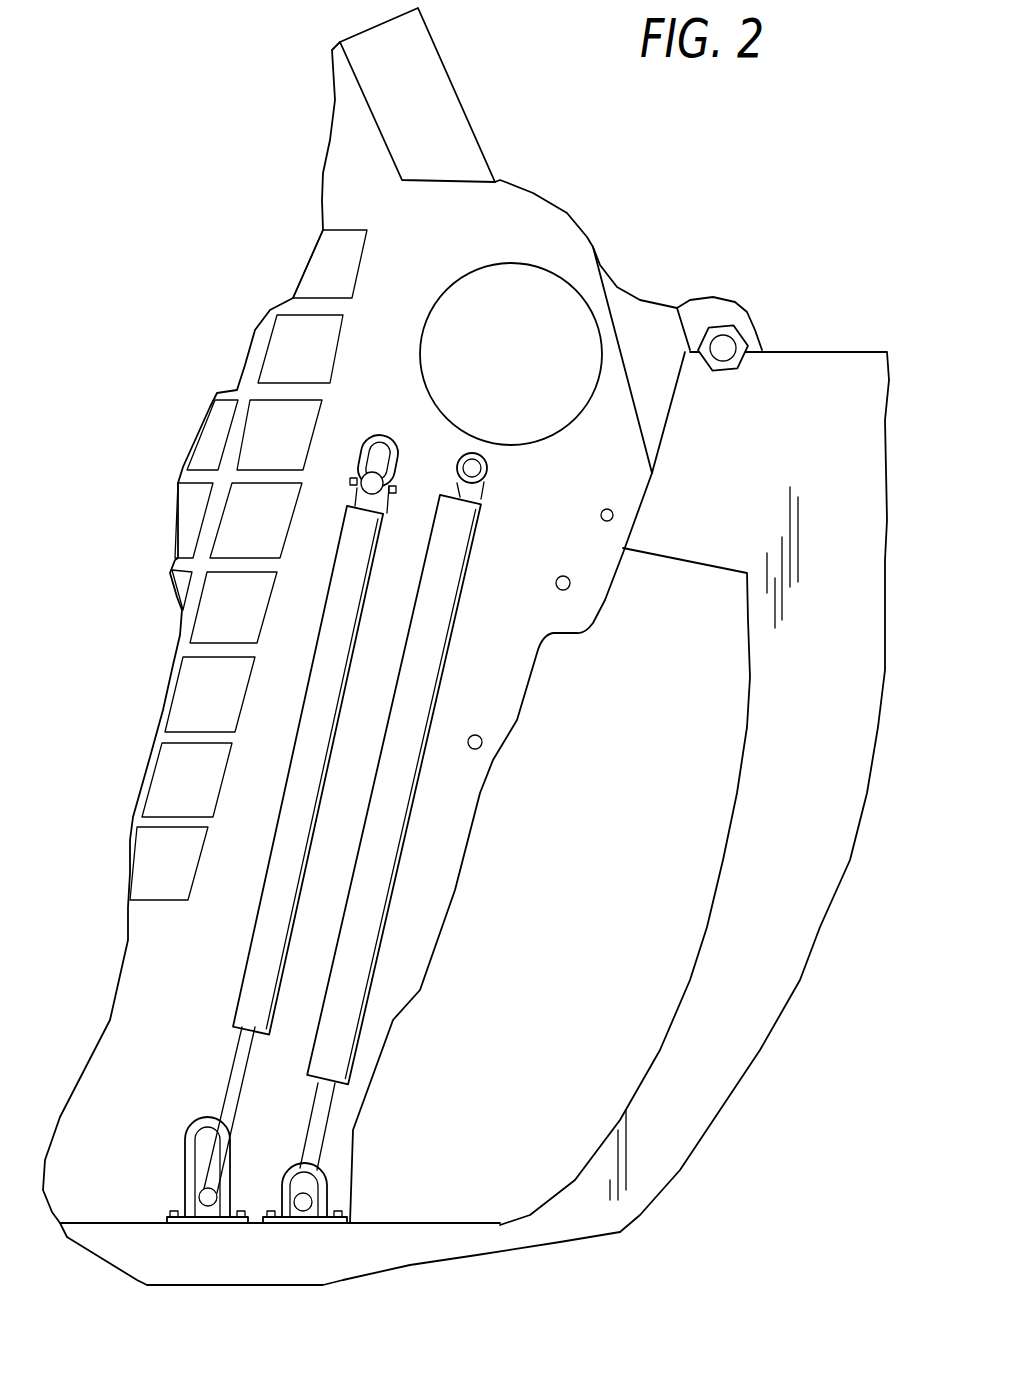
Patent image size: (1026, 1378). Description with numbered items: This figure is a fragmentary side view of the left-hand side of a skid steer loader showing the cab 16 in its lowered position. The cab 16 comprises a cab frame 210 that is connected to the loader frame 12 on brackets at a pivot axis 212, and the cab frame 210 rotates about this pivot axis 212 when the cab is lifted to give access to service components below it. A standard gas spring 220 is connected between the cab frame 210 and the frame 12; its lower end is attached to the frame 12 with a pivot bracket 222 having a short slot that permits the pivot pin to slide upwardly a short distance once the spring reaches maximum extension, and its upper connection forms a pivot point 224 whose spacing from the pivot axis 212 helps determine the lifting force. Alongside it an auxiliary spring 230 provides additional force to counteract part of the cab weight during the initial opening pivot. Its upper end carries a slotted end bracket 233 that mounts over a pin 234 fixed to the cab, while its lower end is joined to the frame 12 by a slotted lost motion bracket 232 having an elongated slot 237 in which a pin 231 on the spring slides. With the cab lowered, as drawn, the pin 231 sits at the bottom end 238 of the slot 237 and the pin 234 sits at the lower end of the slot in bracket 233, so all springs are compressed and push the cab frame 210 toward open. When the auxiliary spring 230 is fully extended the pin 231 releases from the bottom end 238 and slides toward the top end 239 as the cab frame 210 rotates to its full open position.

The frame 12 is at (803, 367).
The cab 16 is at (466, 74).
The cab frame 210 is at (473, 123).
The pivot axis 212 is at (725, 347).
The gas spring 220 is at (415, 720).
The pivot bracket 222 is at (323, 1200).
The pivot point 224 is at (488, 468).
The auxiliary spring 230 is at (272, 898).
The pin 231 is at (203, 1195).
The bracket 232 is at (188, 1162).
The slotted end bracket 233 is at (388, 437).
The pin 234 is at (357, 483).
The elongated slot 237 is at (203, 1147).
The bottom end 238 is at (203, 1217).
The top end 239 is at (193, 1137).